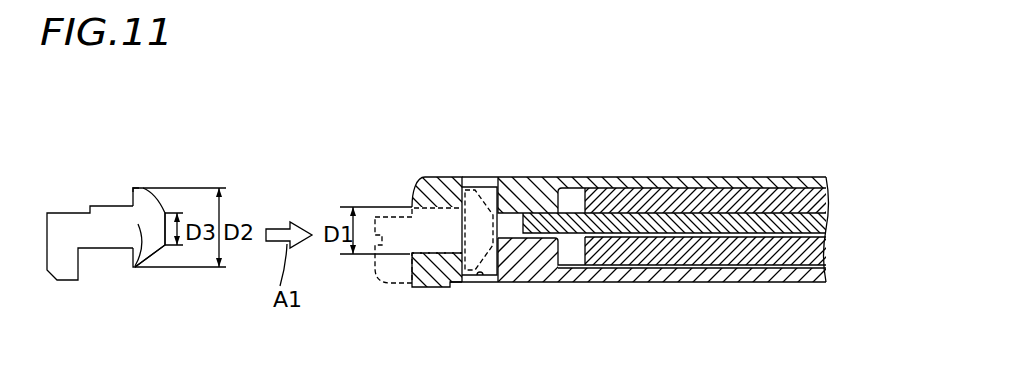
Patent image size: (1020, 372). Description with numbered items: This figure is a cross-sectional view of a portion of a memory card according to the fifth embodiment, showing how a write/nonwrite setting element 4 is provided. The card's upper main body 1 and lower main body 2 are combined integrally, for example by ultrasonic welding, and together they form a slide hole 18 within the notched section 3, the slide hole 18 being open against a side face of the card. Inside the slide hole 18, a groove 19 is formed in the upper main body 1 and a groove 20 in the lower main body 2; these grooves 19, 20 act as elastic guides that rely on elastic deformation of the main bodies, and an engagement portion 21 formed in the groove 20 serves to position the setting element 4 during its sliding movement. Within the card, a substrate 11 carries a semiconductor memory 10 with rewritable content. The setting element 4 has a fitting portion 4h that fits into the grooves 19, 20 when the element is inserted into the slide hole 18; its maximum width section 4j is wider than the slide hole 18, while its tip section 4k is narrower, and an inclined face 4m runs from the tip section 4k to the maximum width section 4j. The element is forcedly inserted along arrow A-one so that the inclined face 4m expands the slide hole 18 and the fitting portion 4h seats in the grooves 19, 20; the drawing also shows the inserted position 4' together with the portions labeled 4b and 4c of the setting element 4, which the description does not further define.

The upper main body 1 is at (552, 275).
The lower main body 2 is at (533, 190).
The notched section 3 is at (398, 232).
The write/nonwrite setting element 4 is at (126, 197).
The plug (inserted position, phantom) 4' is at (405, 270).
The plug head portion 4b is at (140, 177).
The plug body portion 4c is at (99, 191).
The fitting portion 4h is at (133, 268).
The maximum width section 4j is at (133, 188).
The tip section 4k is at (168, 227).
The inclined face 4m is at (153, 256).
The semiconductor memory 10 is at (689, 193).
The substrate 11 is at (572, 220).
The slide hole 18 is at (435, 232).
The groove 19 is at (481, 278).
The groove 20 is at (463, 188).
The engagement portion 21 is at (483, 190).